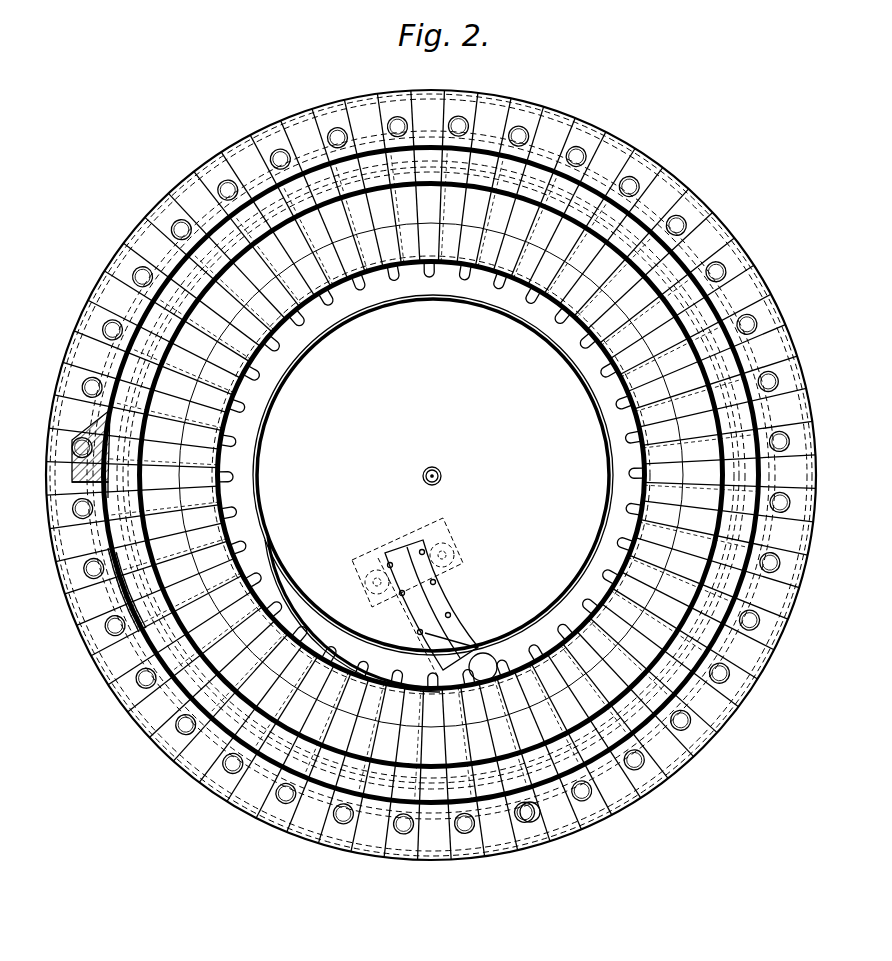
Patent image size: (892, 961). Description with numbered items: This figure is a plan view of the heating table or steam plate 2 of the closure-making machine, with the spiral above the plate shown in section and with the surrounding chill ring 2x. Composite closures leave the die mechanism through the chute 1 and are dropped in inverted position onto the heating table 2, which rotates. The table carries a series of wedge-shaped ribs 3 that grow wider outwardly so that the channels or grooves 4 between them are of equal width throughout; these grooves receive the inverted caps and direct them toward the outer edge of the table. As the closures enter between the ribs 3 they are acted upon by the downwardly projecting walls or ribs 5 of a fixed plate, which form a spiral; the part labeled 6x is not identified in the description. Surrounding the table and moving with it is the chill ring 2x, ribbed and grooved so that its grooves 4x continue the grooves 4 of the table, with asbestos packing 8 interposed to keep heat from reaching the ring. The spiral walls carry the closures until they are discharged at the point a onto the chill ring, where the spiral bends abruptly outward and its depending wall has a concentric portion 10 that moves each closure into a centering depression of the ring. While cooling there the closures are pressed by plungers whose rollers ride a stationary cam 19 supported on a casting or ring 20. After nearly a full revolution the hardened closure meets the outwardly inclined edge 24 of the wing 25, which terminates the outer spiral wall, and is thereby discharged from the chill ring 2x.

The chute 1 is at (430, 607).
The heating table or steam plate 2 is at (433, 493).
The ribs 3 is at (495, 275).
The channels or grooves 4 is at (521, 278).
The downwardly projecting walls or ribs 5 is at (488, 652).
The outer rim 6x is at (598, 152).
The asbestos packing 8 is at (97, 530).
The concentric portion 10 is at (116, 598).
The cam 19 is at (100, 372).
The casting or ring 20 is at (393, 475).
The outwardly inclined edge 24 is at (97, 424).
The wing 25 is at (90, 466).
The point a is at (112, 562).
The chill ring 2x is at (115, 558).
The grooves 4x is at (534, 826).